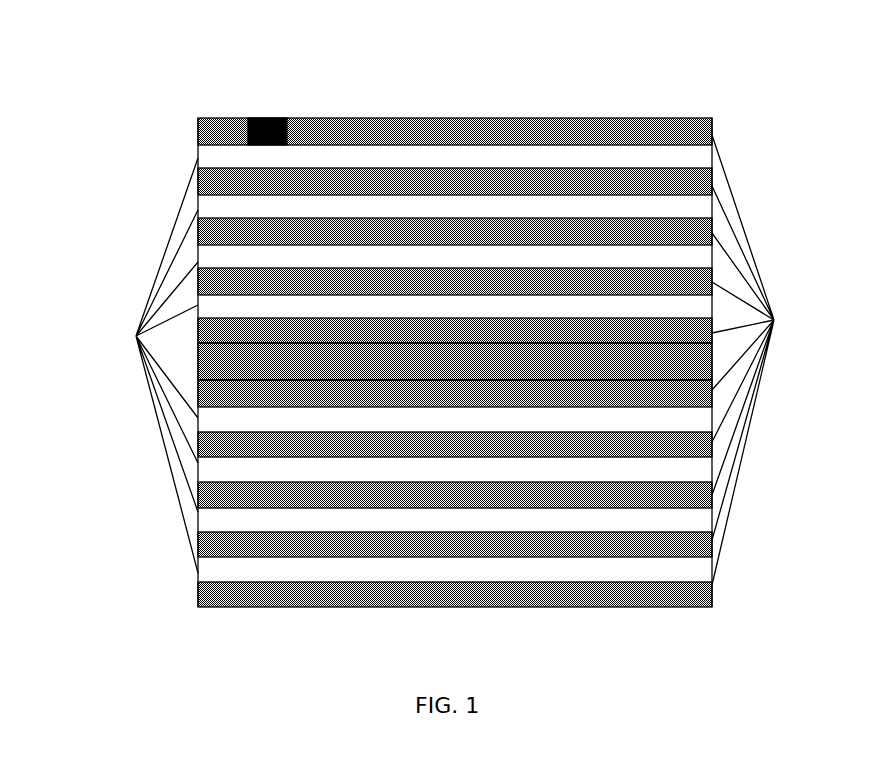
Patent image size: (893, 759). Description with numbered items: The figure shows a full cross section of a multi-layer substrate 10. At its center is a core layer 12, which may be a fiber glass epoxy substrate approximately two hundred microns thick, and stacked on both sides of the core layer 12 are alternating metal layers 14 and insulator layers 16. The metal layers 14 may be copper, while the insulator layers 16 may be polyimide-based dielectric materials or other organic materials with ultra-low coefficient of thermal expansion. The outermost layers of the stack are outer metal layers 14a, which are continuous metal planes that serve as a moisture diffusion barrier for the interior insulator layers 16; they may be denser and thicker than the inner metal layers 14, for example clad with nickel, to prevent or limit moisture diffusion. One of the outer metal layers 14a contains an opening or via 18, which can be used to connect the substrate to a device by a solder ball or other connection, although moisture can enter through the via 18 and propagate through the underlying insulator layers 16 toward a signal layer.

The multi-layer substrate 10 is at (128, 100).
The core layer 12 is at (587, 355).
The metal layers 14 is at (766, 360).
The outer metal layers 14a is at (423, 118).
The insulator layers 16 is at (144, 365).
The vias 18 is at (275, 120).